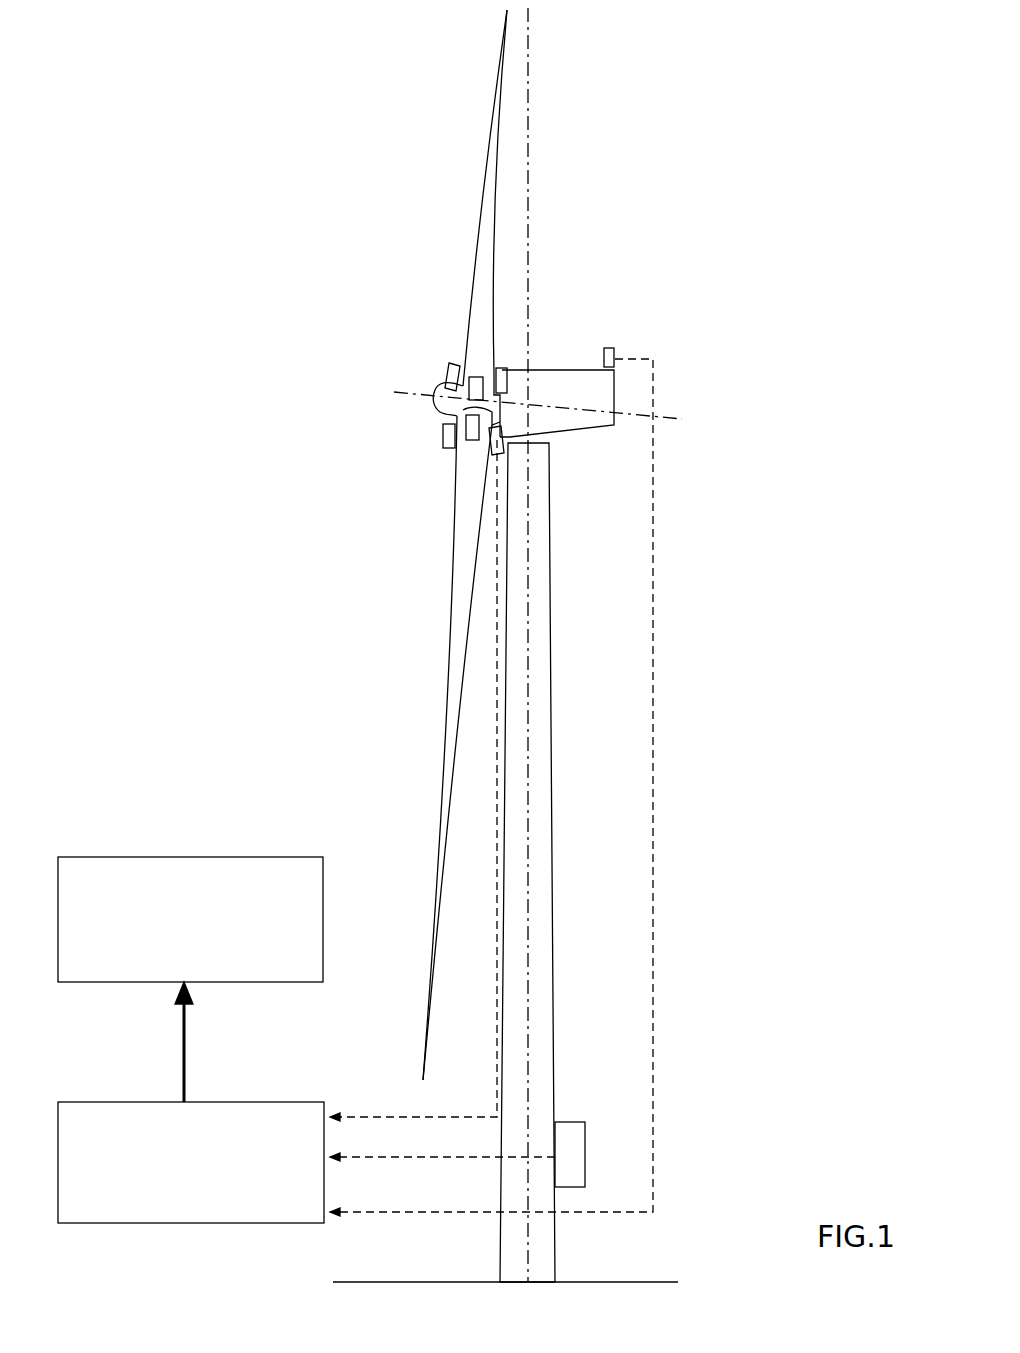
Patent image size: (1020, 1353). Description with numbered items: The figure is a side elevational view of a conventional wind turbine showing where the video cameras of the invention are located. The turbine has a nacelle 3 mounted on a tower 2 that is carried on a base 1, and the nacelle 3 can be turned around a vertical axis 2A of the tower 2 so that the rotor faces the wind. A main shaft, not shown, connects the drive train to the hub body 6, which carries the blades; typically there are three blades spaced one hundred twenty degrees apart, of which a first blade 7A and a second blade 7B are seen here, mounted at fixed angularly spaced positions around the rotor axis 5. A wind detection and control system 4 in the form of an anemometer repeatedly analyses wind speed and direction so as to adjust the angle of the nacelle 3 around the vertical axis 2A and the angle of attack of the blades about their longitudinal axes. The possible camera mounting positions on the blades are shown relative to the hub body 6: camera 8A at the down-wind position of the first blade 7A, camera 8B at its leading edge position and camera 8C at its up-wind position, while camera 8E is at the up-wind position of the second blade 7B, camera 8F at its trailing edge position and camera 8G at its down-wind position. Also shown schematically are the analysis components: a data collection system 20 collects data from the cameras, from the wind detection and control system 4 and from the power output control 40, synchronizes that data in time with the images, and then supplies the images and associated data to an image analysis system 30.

The base 1 is at (580, 1282).
The tower 2 is at (554, 773).
The vertical axis 2A is at (530, 990).
The nacelle 3 is at (570, 364).
The wind detection and control system 4 is at (612, 348).
The rotor axis 5 is at (663, 418).
The hub body 6 is at (453, 393).
The first blade 7A is at (483, 256).
The second blade 7B is at (456, 596).
The camera 8A is at (498, 368).
The camera 8B is at (478, 378).
The camera 8C is at (453, 365).
The camera 8E is at (444, 446).
The camera 8F is at (472, 441).
The camera 8G is at (493, 453).
The data collection system 20 is at (297, 1102).
The image analysis system 30 is at (296, 857).
The power output control 40 is at (580, 1122).